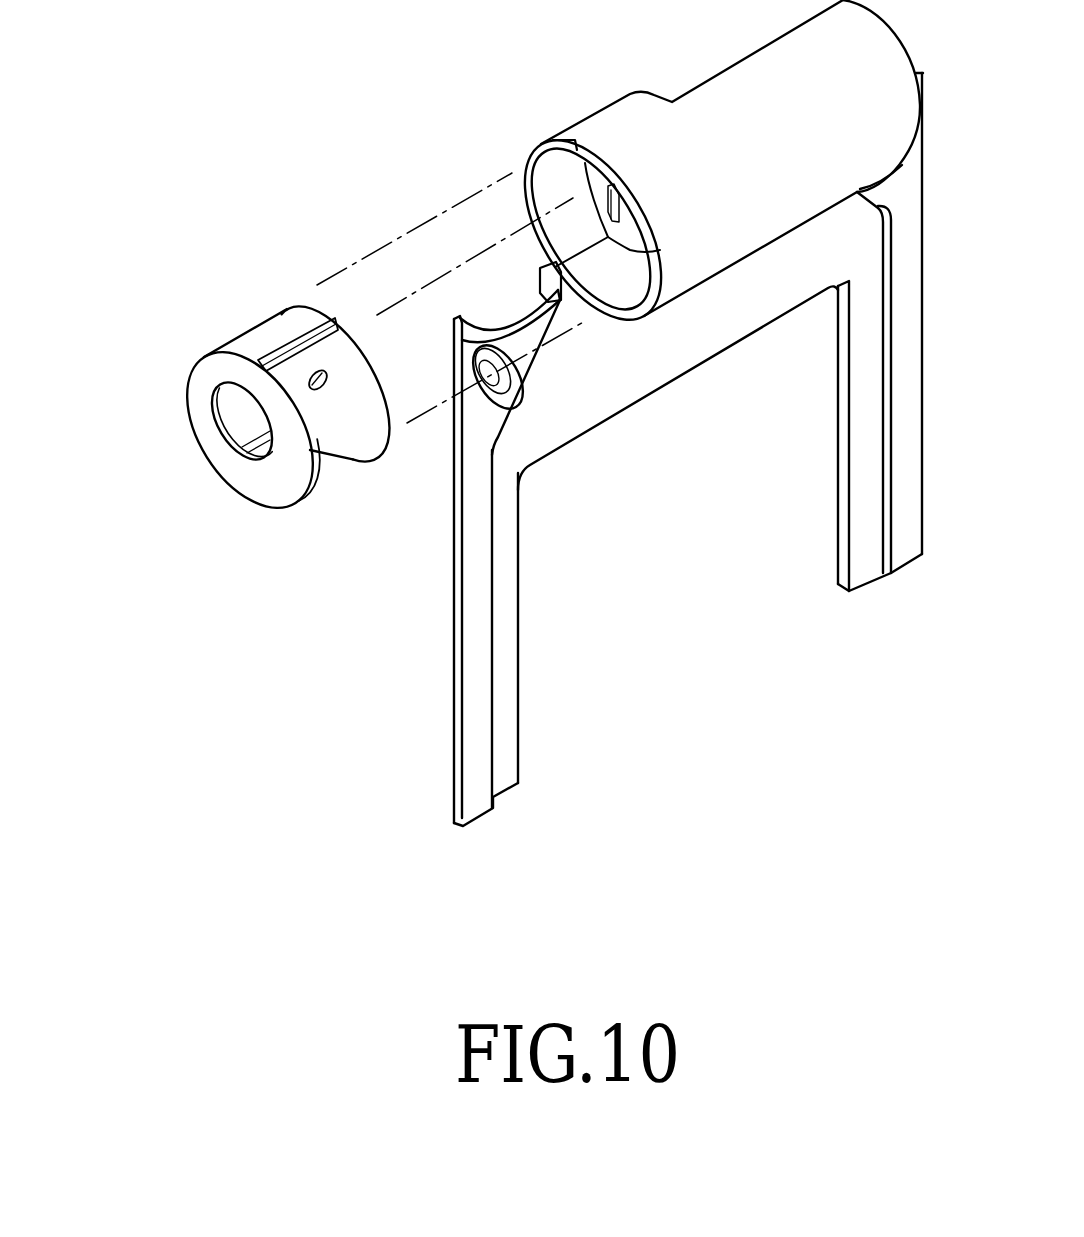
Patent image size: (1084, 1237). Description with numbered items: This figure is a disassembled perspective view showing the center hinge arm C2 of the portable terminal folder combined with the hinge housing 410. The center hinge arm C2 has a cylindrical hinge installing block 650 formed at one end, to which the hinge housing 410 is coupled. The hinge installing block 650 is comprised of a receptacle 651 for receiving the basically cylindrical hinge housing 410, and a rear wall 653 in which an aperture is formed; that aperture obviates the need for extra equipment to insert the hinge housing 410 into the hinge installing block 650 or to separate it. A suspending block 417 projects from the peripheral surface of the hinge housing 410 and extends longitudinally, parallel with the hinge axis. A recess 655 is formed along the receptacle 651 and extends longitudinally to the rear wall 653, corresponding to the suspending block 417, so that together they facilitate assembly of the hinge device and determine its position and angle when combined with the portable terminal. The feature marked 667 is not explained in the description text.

The hinge housing 410 is at (212, 322).
The suspending block 417 is at (208, 463).
The hinge installing block 650 is at (498, 159).
The receptacle 651 is at (636, 314).
The rear wall 653 is at (632, 240).
The recess 655 is at (560, 262).
The notch 667 is at (566, 152).
The center hinge arm C2 is at (741, 90).